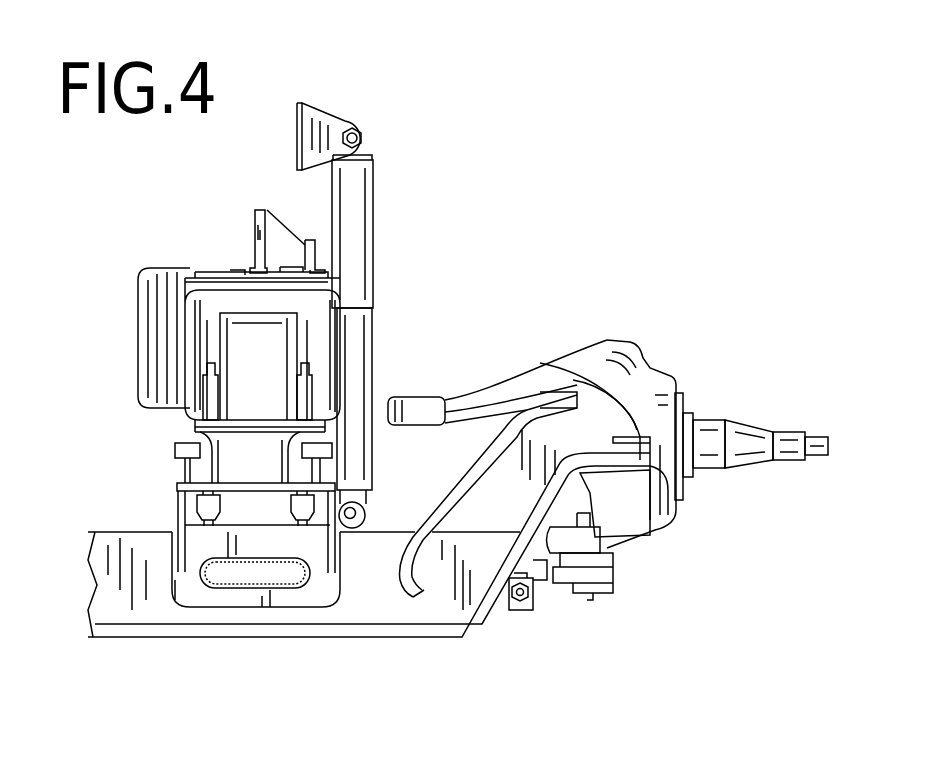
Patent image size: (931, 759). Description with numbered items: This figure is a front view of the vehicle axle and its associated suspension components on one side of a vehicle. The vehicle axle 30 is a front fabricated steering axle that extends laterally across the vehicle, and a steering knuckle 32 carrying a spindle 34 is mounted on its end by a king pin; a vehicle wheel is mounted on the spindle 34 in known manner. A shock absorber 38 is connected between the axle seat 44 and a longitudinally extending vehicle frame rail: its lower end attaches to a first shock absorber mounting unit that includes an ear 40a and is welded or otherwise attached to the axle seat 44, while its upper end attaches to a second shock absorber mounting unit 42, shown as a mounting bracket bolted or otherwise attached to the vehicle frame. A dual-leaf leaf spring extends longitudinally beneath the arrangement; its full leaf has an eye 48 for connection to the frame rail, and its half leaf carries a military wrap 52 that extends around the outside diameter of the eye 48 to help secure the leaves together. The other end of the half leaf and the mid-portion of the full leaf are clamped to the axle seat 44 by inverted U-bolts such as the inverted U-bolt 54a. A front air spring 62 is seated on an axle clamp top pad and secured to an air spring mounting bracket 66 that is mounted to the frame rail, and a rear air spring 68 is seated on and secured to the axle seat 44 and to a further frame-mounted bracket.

The vehicle axle 30 is at (142, 604).
The steering knuckle 32 is at (603, 345).
The spindle 34 is at (750, 466).
The shock absorber 38 is at (360, 200).
The ear 40a is at (356, 530).
The second shock absorber mounting unit 42 is at (318, 130).
The axle seat 44 is at (185, 487).
The eye 48 is at (225, 338).
The military wrap 52 is at (245, 388).
The inverted U-bolt 54a is at (210, 455).
The front air spring 62 is at (181, 290).
The air spring mounting bracket 66 is at (268, 222).
The rear air spring 68 is at (139, 268).